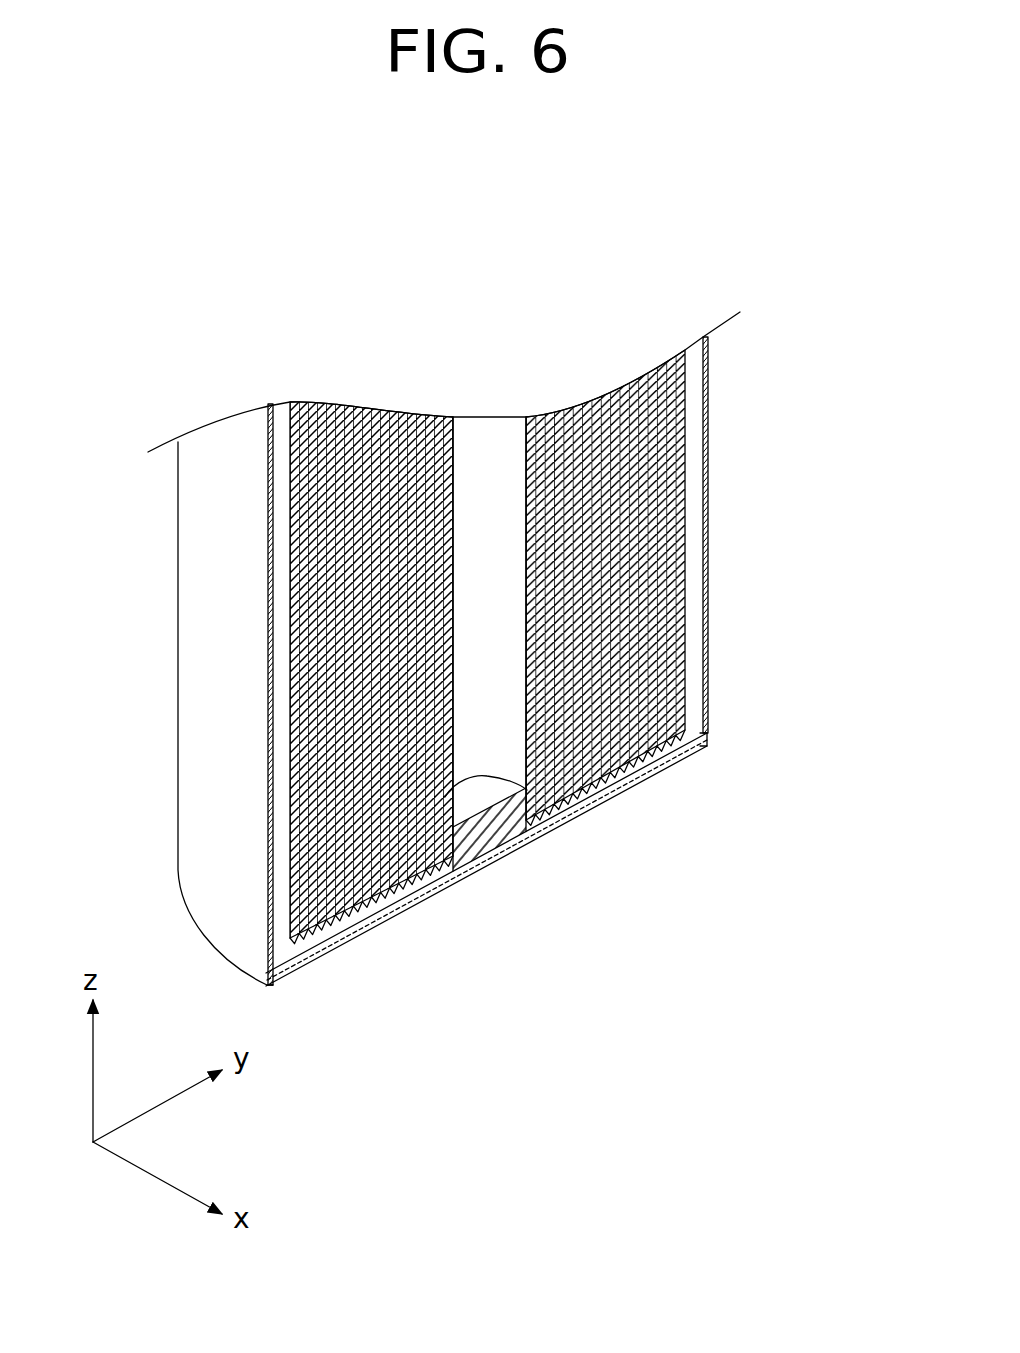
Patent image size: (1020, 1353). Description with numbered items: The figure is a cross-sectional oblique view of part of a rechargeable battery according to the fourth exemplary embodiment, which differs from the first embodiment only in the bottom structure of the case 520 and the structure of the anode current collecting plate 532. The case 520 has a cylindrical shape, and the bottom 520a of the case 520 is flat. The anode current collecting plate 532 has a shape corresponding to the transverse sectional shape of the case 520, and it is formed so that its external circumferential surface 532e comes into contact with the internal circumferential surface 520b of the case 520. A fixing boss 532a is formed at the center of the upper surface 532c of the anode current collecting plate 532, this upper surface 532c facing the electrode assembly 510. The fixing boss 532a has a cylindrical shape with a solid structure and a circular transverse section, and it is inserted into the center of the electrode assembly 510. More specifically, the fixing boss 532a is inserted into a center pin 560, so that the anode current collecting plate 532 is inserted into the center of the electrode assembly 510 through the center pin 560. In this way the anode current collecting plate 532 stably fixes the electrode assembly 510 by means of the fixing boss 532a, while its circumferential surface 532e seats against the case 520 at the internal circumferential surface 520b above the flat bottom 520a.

The electrode assembly 510 is at (588, 784).
The case 520 is at (188, 618).
The bottom of case 520a is at (695, 754).
The internal circumferential surface of case 520b is at (279, 938).
The anode current collecting plate 532 is at (372, 930).
The fixing boss 532a is at (467, 800).
The upper surface of anode current collecting plate 532c is at (695, 726).
The external circumferential surface of anode current collecting plate 532e is at (262, 973).
The center pin 560 is at (485, 517).